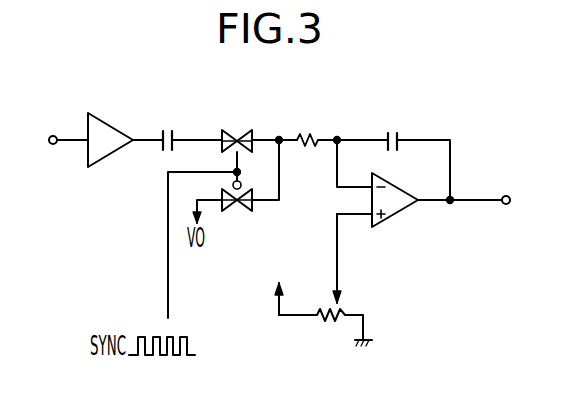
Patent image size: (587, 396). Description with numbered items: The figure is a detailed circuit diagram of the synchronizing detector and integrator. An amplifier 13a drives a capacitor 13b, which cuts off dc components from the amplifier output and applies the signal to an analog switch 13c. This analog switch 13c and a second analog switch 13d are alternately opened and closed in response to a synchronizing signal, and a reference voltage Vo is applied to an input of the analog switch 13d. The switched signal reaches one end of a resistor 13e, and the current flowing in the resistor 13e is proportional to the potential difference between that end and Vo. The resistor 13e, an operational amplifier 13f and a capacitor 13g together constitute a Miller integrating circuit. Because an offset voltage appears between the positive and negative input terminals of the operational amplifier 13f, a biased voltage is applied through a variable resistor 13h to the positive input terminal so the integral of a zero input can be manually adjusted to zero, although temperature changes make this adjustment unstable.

The amplifier 13a is at (107, 122).
The capacitor 13b is at (168, 128).
The analog switch 13c is at (235, 129).
The analog switch 13d is at (234, 212).
The resistor 13e is at (310, 133).
The operational amplifier 13f is at (398, 222).
The capacitor 13g is at (392, 131).
The variable resistor 13h is at (322, 318).